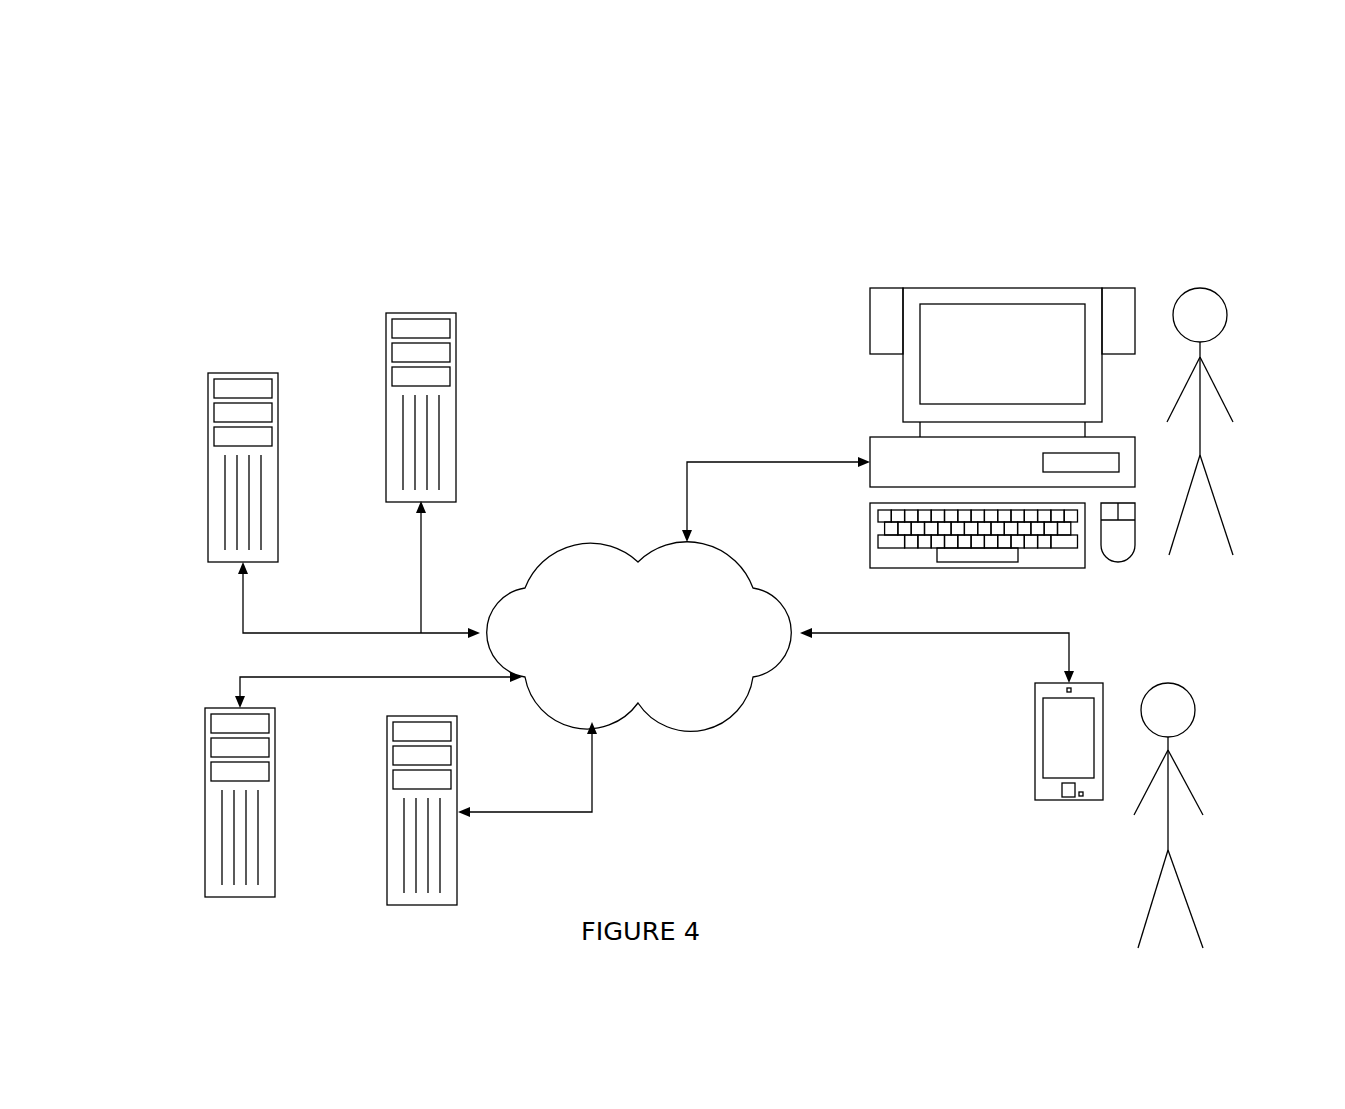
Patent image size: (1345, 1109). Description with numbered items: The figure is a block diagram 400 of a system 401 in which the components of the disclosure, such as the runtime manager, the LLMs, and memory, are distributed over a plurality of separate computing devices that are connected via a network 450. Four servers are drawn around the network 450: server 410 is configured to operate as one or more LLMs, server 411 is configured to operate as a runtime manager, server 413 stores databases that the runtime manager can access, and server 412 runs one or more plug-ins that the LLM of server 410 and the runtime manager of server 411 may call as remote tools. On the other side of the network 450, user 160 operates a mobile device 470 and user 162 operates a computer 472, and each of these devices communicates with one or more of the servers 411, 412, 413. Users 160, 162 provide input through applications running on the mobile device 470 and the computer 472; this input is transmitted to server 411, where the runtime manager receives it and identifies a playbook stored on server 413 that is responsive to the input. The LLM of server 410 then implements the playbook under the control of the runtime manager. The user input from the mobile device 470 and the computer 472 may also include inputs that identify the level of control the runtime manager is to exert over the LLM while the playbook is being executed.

The block diagram 400 is at (157, 45).
The system 401 is at (527, 264).
The server 410 is at (205, 722).
The server 411 is at (207, 472).
The server 412 is at (387, 808).
The server 413 is at (386, 410).
The network 450 is at (582, 542).
The mobile device 470 is at (1035, 703).
The computer 472 is at (1003, 288).
The user 160 is at (1201, 753).
The user 162 is at (1238, 371).